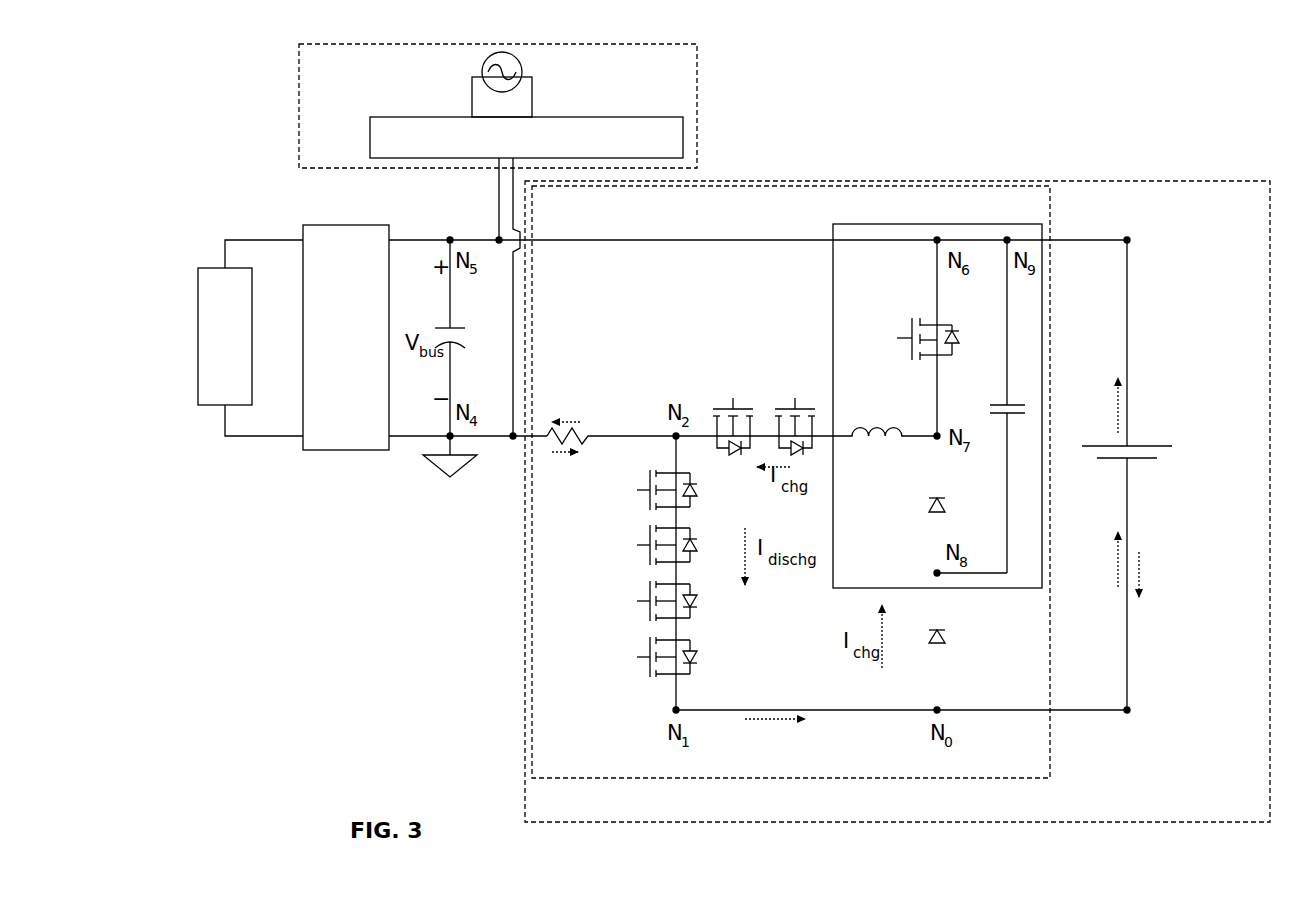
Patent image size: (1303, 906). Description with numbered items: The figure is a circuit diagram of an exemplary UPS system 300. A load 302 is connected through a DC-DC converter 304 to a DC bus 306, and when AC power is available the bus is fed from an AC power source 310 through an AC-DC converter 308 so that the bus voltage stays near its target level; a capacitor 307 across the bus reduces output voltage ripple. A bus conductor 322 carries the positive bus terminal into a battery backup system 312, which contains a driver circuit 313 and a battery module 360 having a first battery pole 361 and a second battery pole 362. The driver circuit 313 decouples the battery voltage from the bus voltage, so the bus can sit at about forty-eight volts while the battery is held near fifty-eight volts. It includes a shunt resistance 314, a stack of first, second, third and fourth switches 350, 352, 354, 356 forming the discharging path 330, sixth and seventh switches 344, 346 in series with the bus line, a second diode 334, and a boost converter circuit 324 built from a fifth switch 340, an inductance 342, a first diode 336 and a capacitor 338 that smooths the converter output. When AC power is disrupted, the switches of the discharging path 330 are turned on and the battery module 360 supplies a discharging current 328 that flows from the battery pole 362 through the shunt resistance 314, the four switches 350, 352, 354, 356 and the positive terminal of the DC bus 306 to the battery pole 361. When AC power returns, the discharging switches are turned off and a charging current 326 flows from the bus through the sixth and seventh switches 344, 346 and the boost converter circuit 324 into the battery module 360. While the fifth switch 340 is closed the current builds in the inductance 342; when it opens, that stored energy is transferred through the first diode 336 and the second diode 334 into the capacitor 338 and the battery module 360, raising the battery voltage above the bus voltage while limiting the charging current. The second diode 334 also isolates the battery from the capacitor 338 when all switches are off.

The UPS system 300 is at (238, 42).
The load 302 is at (222, 266).
The DC-DC converter 304 is at (363, 450).
The DC bus 306 is at (454, 212).
The capacitor 307 is at (352, 78).
The AC-DC converter 308 is at (683, 138).
The AC power source 310 is at (532, 102).
The battery backup system 312 is at (676, 806).
The driver circuit 313 is at (650, 770).
The shunt resistance 314 is at (585, 428).
The connection line 322 is at (730, 240).
The boost converter circuit 324 is at (983, 226).
The charging current 326 is at (562, 385).
The discharging current 328 is at (566, 495).
The discharging path 330 is at (762, 722).
The diode D2 334 is at (946, 638).
The diode D1 336 is at (945, 506).
The capacitor C1 338 is at (997, 402).
The transistor M5 340 is at (958, 338).
The inductor L1 342 is at (878, 445).
The transistor M6 344 is at (772, 380).
The transistor M7 346 is at (720, 380).
The transistor M1 350 is at (647, 500).
The transistor M2 352 is at (647, 556).
The transistor M3 354 is at (647, 616).
The transistor M4 356 is at (647, 670).
The battery module 360 is at (1175, 481).
The battery pole 361 is at (1160, 442).
The battery pole 362 is at (1132, 462).